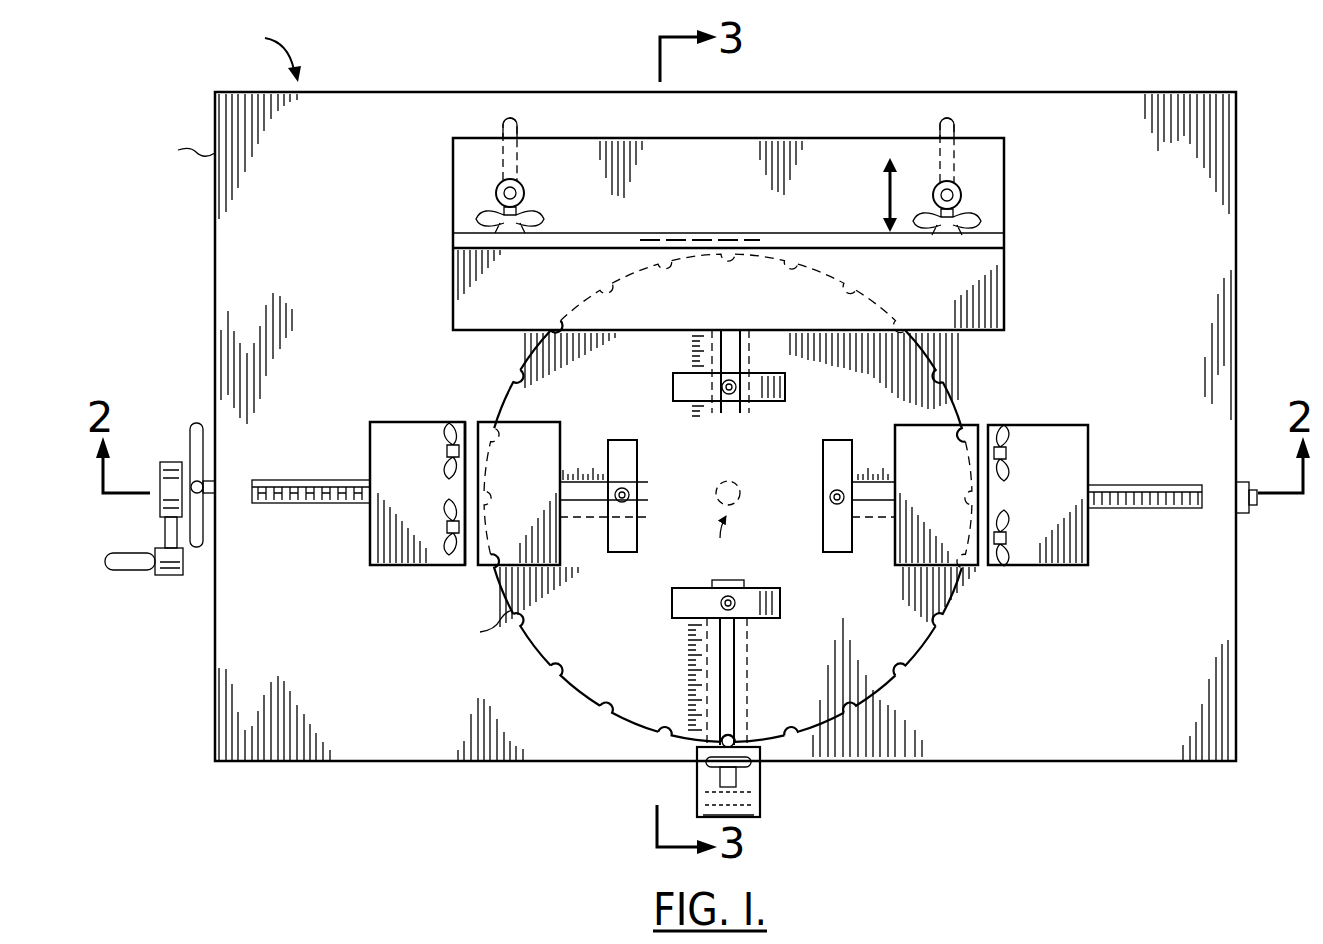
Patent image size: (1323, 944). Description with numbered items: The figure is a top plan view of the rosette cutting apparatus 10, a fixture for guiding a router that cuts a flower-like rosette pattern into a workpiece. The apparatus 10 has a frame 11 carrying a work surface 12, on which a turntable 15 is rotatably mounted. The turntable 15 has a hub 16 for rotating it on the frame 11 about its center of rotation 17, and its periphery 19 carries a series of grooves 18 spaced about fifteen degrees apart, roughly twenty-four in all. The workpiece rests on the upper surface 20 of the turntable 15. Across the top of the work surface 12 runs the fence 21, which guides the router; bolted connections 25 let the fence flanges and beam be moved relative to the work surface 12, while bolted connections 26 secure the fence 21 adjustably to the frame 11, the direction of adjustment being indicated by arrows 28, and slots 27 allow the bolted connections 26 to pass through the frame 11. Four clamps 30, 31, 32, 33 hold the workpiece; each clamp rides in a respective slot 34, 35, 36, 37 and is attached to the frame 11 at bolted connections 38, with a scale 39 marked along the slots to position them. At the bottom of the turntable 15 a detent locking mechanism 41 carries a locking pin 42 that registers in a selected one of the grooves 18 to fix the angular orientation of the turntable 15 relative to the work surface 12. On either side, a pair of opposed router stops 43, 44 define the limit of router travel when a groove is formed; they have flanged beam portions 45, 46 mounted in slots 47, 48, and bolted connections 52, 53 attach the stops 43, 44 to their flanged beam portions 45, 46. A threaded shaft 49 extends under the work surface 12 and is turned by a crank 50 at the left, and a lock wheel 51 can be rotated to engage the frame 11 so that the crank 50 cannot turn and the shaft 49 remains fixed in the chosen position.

The rosette cutting apparatus 10 is at (267, 50).
The frame 11 is at (180, 150).
The work surface 12 is at (315, 162).
The turntable 15 is at (739, 498).
The hub 16 is at (736, 480).
The center of rotation 17 is at (708, 538).
The grooves 18 is at (515, 372).
The periphery 19 is at (479, 629).
The upper surface 20 is at (592, 392).
The fence 21 is at (686, 197).
The bolted connections 25 is at (975, 237).
The bolted connections 26 is at (496, 192).
The slots 27 is at (510, 118).
The arrows 28 is at (887, 203).
The clamp 30 is at (780, 601).
The clamp 31 is at (622, 445).
The clamp 32 is at (760, 385).
The clamp 33 is at (830, 445).
The slot 34 is at (735, 690).
The slot 35 is at (595, 505).
The slot 36 is at (726, 350).
The slot 37 is at (868, 490).
The bolted connections 38 is at (728, 395).
The scale 39 is at (580, 455).
The detent locking mechanism 41 is at (760, 792).
The locking pin 42 is at (714, 752).
The router stop 43 is at (504, 484).
The router stop 44 is at (916, 494).
The flanged beam portion 45 is at (387, 484).
The flanged beam portion 46 is at (1031, 525).
The slot 47 is at (332, 470).
The slot 48 is at (1182, 481).
The threaded shaft 49 is at (340, 503).
The crank 50 is at (168, 575).
The lock wheel 51 is at (196, 425).
The bolted connection 52 is at (452, 434).
The bolted connection 53 is at (1005, 445).